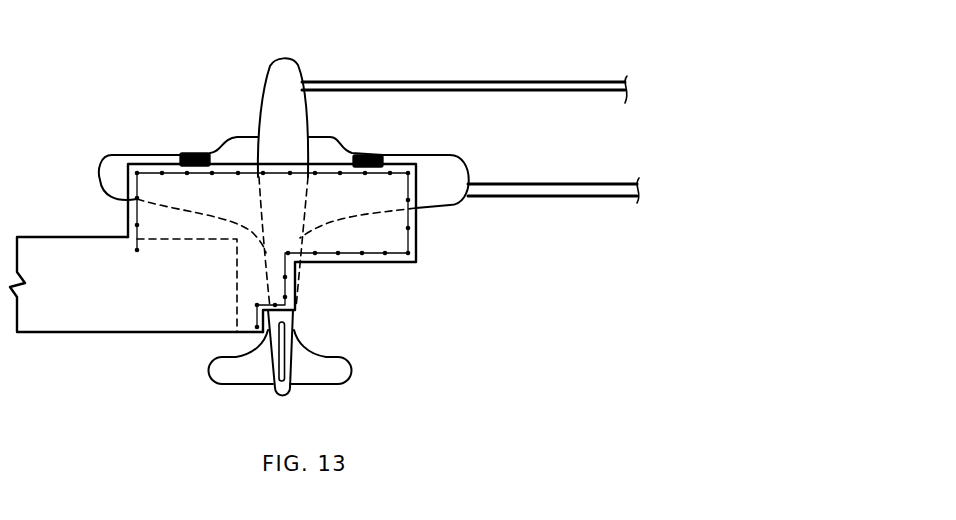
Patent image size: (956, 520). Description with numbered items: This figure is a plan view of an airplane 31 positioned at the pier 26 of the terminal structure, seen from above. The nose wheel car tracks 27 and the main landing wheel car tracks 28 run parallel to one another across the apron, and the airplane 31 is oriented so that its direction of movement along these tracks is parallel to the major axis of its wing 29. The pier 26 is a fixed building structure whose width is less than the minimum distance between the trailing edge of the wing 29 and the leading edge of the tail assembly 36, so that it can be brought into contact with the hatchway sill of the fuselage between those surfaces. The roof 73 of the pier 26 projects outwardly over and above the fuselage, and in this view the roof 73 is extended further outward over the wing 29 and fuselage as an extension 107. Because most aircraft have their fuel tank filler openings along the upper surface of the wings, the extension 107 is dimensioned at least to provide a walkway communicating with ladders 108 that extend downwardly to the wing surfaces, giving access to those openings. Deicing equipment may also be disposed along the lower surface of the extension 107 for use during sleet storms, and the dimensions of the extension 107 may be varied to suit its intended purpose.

The pier 26 is at (35, 314).
The nose wheel car tracks 27 is at (552, 82).
The main landing wheel car tracks 28 is at (547, 190).
The wing 29 is at (115, 167).
The airplane 31 is at (281, 99).
The tail assembly 36 is at (344, 370).
The roof 73 is at (186, 320).
The extension 107 is at (400, 246).
The ladders 108 is at (193, 153).